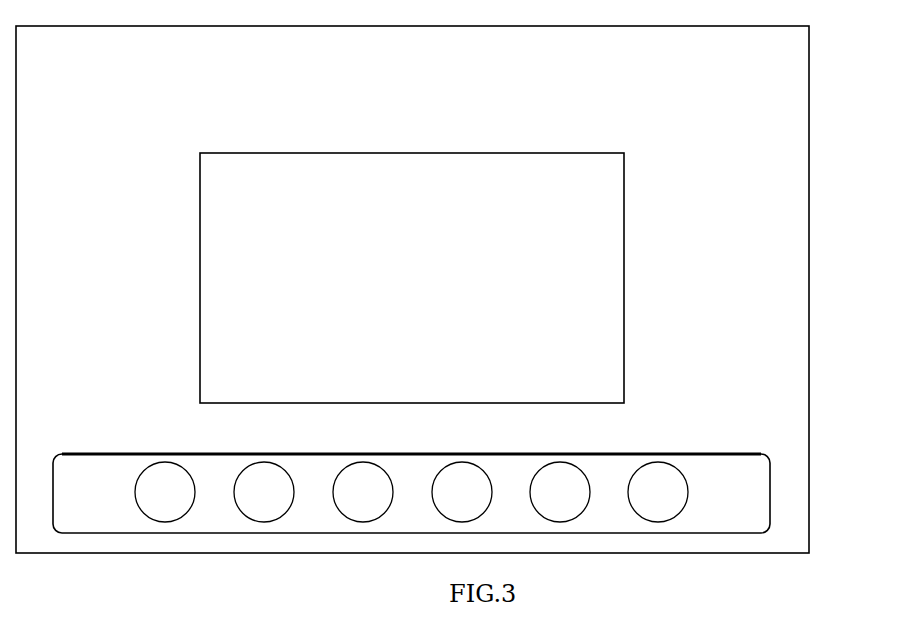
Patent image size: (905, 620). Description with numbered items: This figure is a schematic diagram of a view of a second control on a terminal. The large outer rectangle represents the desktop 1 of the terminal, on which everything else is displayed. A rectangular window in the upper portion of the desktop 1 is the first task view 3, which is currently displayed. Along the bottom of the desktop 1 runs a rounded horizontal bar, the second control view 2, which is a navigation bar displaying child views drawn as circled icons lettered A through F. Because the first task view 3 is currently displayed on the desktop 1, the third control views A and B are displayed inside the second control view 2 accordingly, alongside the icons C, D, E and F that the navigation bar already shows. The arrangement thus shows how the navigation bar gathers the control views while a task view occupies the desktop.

The desktop 1 is at (810, 72).
The second control view 2 is at (642, 452).
The first task view 3 is at (598, 153).